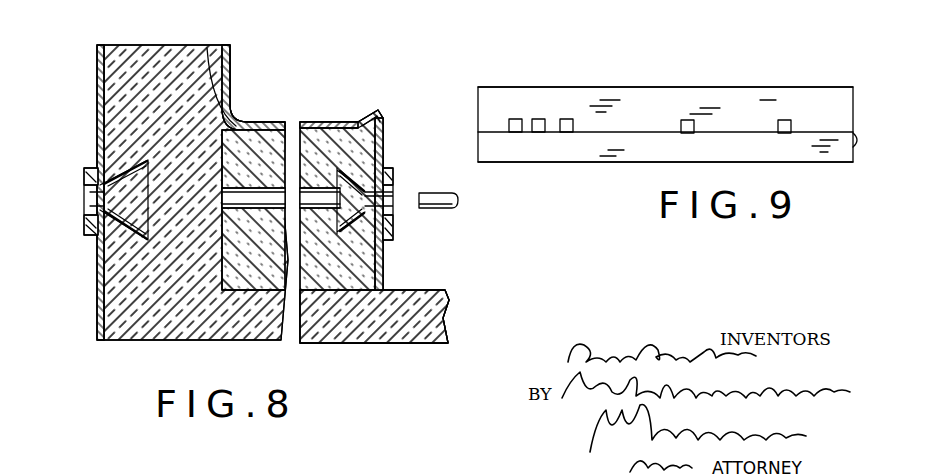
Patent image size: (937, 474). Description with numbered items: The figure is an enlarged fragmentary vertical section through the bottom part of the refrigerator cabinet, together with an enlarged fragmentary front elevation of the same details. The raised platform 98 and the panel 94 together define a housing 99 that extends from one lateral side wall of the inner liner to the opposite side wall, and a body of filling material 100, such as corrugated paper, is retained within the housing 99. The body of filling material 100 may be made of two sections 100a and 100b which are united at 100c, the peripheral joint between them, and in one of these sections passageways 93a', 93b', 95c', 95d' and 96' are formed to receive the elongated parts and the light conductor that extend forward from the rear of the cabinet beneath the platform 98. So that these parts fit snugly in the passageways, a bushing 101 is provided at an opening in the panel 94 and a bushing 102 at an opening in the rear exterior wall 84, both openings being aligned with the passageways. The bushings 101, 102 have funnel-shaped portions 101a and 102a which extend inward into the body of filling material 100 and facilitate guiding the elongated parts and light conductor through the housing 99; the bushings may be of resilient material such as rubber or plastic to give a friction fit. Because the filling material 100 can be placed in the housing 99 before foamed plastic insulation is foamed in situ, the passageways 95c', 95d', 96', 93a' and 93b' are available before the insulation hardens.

In FIG. 8, the rear exterior wall 84 is at (97, 292).
In FIG. 8, the raised platform 98 is at (258, 122).
In FIG. 8, the housing 99 is at (374, 108).
In FIG. 8, the panel 94 is at (380, 138).
In FIG. 8, the body of filling material 100 is at (333, 298).
In FIG. 9, the body of filling material 100 is at (478, 130).
In FIG. 8, the section of filling material body 100a is at (207, 48).
In FIG. 9, the section of filling material body 100a is at (478, 88).
In FIG. 8, the section of filling material body 100b is at (347, 268).
In FIG. 9, the section of filling material body 100b is at (530, 140).
In FIG. 9, the peripheral joint 100c is at (858, 140).
In FIG. 8, the bushing 101 is at (84, 180).
In FIG. 8, the funnel-shaped portion 101a is at (130, 165).
In FIG. 8, the bushing 102 is at (393, 226).
In FIG. 8, the funnel-shaped portion 102a is at (388, 192).
In FIG. 9, the passageway 95c' is at (492, 86).
In FIG. 9, the passageway 96' is at (545, 86).
In FIG. 9, the passageway 95d' is at (591, 75).
In FIG. 9, the passageway 93b' is at (692, 83).
In FIG. 9, the passageway 93a' is at (779, 83).